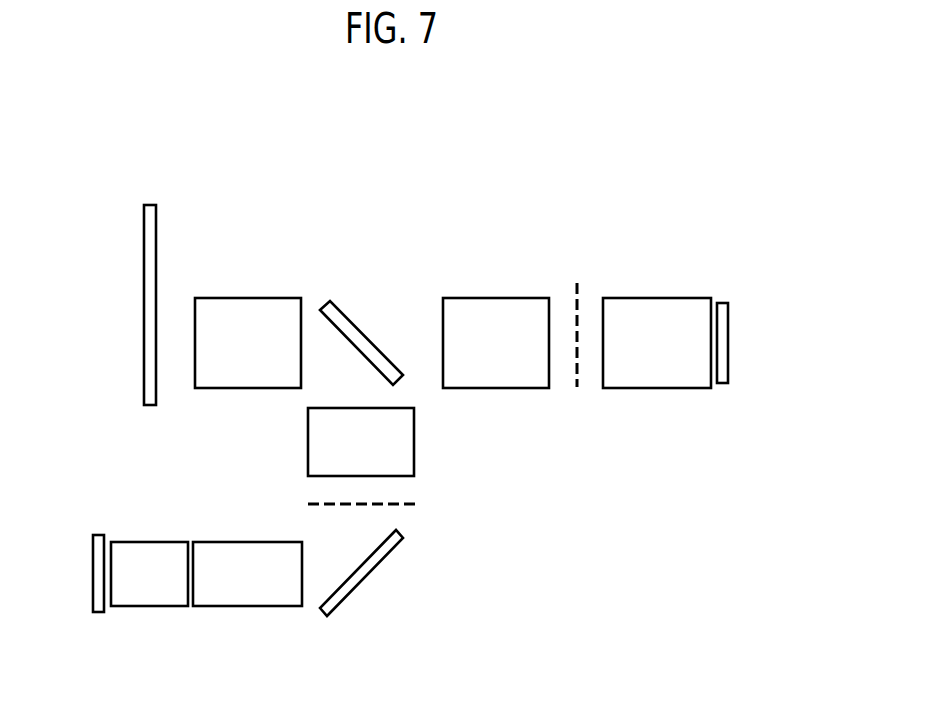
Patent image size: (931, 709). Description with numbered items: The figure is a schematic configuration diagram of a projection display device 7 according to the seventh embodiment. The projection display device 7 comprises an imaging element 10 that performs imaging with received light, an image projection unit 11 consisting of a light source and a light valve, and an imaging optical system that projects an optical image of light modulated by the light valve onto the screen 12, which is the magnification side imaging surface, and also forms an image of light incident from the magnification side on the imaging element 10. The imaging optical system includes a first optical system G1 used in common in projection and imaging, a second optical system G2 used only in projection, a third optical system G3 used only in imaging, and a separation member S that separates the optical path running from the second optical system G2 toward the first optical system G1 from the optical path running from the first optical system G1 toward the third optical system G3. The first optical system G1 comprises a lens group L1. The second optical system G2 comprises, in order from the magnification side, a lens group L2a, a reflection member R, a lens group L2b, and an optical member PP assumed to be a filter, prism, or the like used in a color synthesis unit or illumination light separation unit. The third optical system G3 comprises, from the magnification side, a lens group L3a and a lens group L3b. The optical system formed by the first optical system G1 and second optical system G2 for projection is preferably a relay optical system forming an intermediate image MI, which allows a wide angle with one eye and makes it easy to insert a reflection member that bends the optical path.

The projection display device 7 is at (380, 166).
The screen 12 is at (150, 342).
The first optical system G1 is at (254, 218).
The lens group L1 is at (227, 298).
The separation member S is at (355, 322).
The third optical system G3 is at (653, 218).
The lens group L3a is at (528, 298).
The lens group L3b is at (625, 298).
The imaging element 10 is at (730, 364).
The intermediate image MI is at (577, 392).
The second optical system G2 is at (523, 480).
The lens group L2a is at (414, 453).
The reflection member R is at (375, 568).
The lens group L2b is at (270, 606).
The optical member PP is at (165, 606).
The image projection unit 11 is at (98, 589).